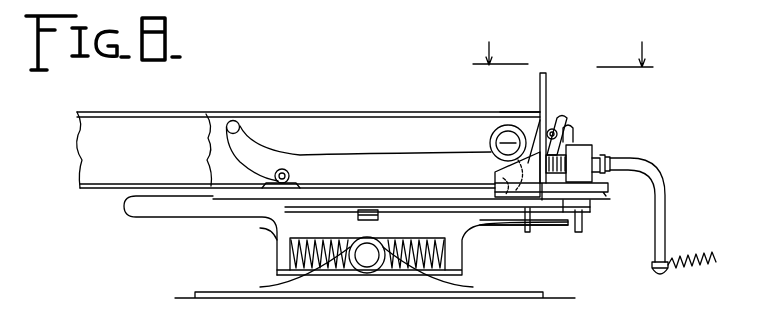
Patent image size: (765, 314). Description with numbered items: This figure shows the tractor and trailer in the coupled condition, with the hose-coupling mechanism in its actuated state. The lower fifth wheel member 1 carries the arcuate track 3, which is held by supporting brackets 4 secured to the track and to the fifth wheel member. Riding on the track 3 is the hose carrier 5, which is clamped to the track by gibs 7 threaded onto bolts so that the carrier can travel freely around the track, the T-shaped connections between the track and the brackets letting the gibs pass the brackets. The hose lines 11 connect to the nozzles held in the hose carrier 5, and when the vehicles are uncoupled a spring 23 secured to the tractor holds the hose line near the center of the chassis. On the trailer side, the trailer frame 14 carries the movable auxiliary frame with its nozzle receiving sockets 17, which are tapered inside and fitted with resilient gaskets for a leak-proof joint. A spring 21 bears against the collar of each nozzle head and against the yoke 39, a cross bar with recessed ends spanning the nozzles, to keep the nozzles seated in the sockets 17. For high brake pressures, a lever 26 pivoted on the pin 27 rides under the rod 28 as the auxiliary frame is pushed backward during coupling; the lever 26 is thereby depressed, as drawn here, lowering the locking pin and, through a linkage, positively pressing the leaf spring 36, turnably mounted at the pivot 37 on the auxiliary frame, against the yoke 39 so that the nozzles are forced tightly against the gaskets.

The lower fifth wheel member 1 is at (228, 210).
The arcuate track 3 is at (555, 204).
The supporting brackets 4 is at (378, 213).
The hose carrier 5 is at (590, 153).
The gibs 7 is at (576, 224).
The hose lines 11 is at (664, 213).
The trailer frame 14 is at (186, 124).
The nozzle receiving sockets 17 is at (512, 164).
The spring 21 is at (571, 158).
The spring 23 is at (696, 257).
The lever 26 is at (375, 162).
The pin 27 is at (286, 173).
The rod 28 is at (490, 143).
The leaf spring 36 is at (566, 123).
The pivot 37 is at (550, 126).
The yoke 39 is at (548, 132).